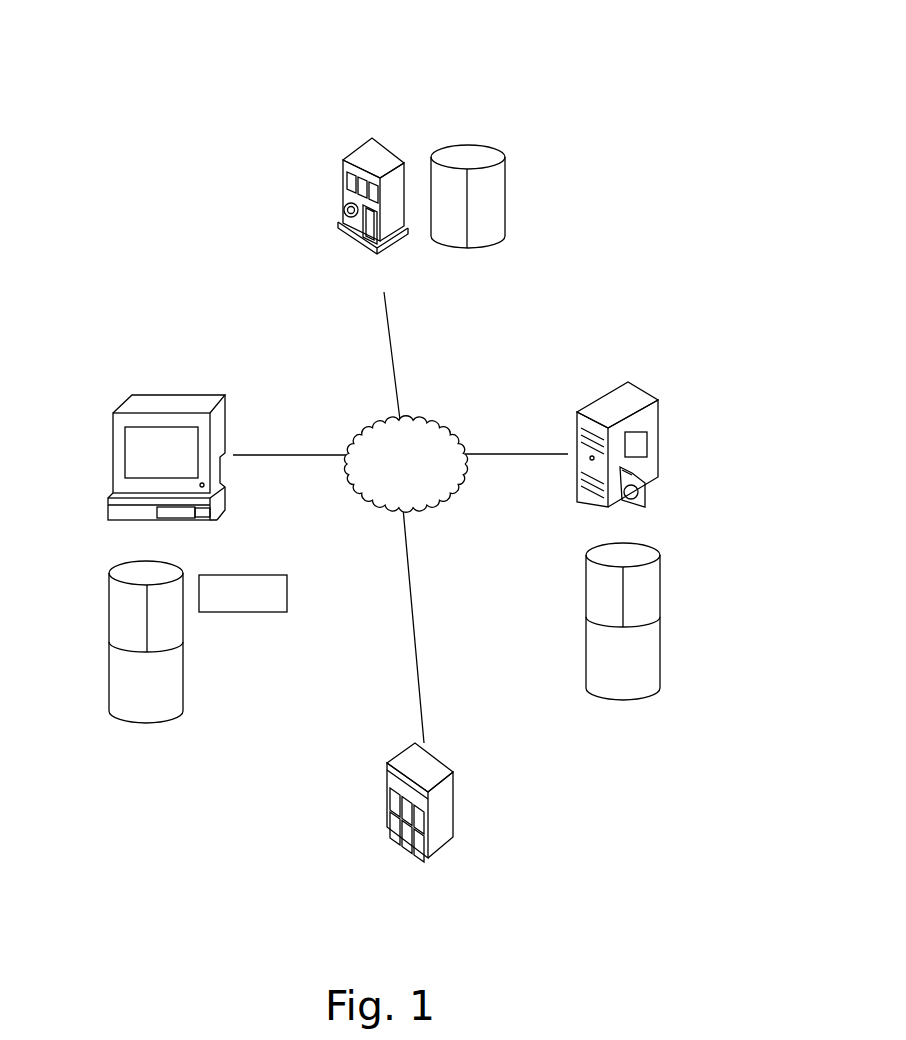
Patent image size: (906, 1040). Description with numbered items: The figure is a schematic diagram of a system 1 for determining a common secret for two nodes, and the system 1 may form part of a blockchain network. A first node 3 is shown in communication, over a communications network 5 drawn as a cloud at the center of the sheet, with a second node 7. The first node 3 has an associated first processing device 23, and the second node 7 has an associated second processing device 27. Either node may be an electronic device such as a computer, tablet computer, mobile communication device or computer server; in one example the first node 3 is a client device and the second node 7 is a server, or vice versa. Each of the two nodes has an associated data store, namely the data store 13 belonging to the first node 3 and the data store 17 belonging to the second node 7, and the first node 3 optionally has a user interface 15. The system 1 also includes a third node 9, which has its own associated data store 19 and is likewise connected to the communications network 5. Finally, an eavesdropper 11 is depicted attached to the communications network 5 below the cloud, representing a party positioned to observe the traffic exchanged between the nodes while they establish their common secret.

The system 1 is at (230, 97).
The first node 3 is at (198, 400).
The communications network 5 is at (435, 435).
The second node 7 is at (613, 402).
The third node 9 is at (362, 150).
The eavesdropper 11 is at (428, 772).
The data store 13 is at (143, 705).
The user interface 15 is at (243, 598).
The data store 17 is at (623, 682).
The data store 19 is at (499, 185).
The first processing device 23 is at (187, 512).
The second processing device 27 is at (642, 445).